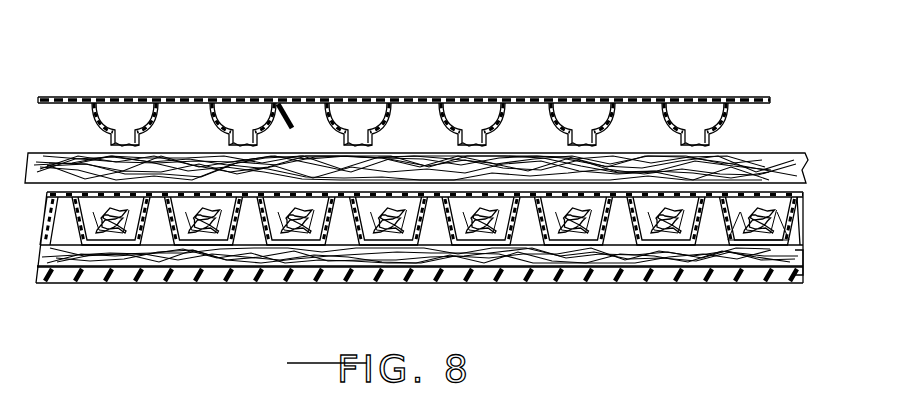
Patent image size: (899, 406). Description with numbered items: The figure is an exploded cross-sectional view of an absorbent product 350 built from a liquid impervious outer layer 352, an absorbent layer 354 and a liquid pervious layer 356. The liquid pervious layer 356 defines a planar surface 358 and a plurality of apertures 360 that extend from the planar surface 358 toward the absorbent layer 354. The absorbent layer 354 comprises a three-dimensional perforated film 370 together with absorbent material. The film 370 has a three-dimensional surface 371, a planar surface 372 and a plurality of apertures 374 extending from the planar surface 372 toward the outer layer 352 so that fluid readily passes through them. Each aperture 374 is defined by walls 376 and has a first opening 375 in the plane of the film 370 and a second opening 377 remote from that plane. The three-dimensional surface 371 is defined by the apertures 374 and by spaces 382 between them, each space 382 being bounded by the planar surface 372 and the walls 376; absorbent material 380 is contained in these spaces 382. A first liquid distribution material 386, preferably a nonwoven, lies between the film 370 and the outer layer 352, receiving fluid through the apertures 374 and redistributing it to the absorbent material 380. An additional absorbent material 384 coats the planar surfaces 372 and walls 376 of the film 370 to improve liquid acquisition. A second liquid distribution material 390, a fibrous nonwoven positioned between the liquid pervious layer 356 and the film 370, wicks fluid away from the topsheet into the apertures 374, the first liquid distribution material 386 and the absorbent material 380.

The absorbent product 350 is at (57, 90).
The liquid impervious outer layer 352 is at (131, 294).
The absorbent layer 354 is at (30, 230).
The liquid pervious layer 356 is at (97, 92).
The planar surface 358 is at (288, 100).
The apertures 360 is at (246, 113).
The three-dimensional perforated film 370 is at (810, 206).
The three-dimensional surface 371 is at (409, 228).
The planar surface 372 is at (632, 226).
The apertures 374 is at (714, 214).
The first opening 375 is at (528, 200).
The walls 376 is at (625, 228).
The second opening 377 is at (497, 236).
The absorbent material 380 is at (677, 252).
The spaces 382 is at (294, 228).
The additional absorbent material 384 is at (284, 205).
The first liquid distribution material 386 is at (719, 212).
The second liquid distribution material 390 is at (812, 263).